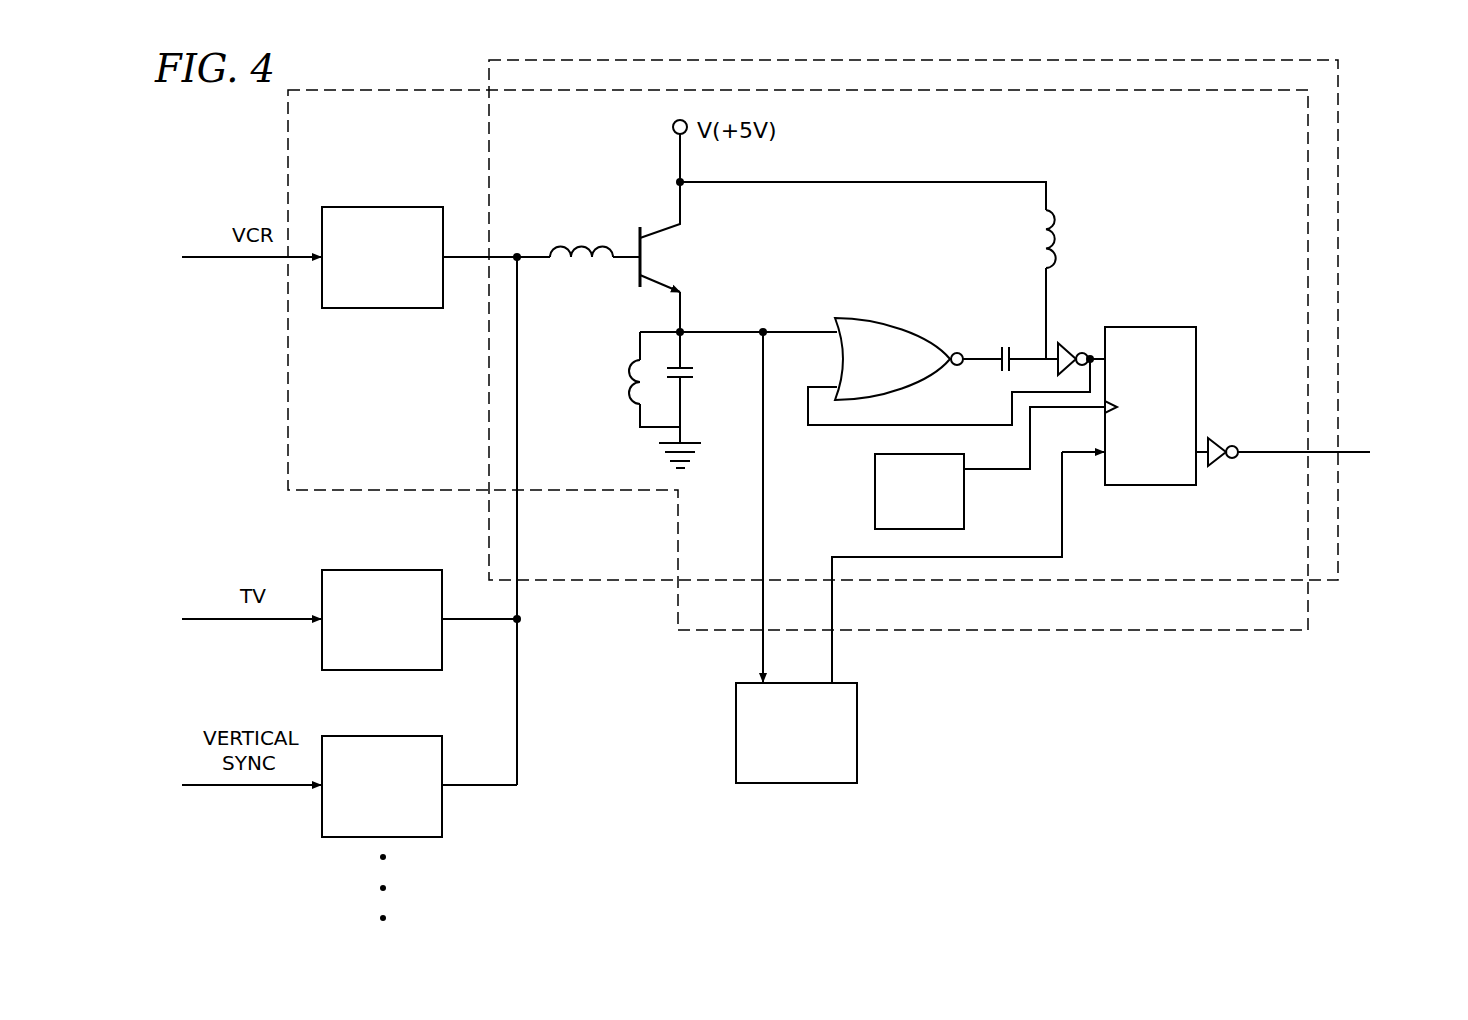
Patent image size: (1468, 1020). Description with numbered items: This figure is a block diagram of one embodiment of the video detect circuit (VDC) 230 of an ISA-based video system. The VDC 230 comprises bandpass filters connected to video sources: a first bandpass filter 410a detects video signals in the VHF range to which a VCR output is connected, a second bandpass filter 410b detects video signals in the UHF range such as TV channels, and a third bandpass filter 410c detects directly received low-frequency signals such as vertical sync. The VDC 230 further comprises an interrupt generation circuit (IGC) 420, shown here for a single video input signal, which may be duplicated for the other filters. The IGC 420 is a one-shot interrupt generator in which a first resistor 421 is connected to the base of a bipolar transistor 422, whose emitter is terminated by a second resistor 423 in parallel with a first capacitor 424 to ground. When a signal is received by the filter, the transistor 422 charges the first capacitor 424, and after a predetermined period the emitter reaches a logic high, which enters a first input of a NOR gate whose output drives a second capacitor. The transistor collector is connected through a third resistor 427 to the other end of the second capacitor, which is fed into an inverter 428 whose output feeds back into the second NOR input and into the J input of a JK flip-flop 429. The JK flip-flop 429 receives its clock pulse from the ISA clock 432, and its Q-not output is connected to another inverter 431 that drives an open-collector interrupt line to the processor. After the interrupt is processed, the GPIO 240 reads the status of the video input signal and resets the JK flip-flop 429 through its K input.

The bandpass filter 410a is at (372, 207).
The bandpass filter 410b is at (372, 570).
The bandpass filter 410c is at (372, 736).
The resistor R1 421 is at (583, 235).
The bipolar transistor 422 is at (638, 233).
The resistor R2 423 is at (620, 388).
The capacitor C1 424 is at (686, 381).
The resistor R3 427 is at (1060, 240).
The inverter 428 is at (1065, 355).
The JK flip-flop 429 is at (1162, 327).
The inverter 431 is at (1222, 440).
The ISA clock 432 is at (873, 470).
The GPIO 240 is at (795, 783).
The video detect circuit 230 is at (1308, 135).
The interrupt generation circuit 420 is at (1338, 247).